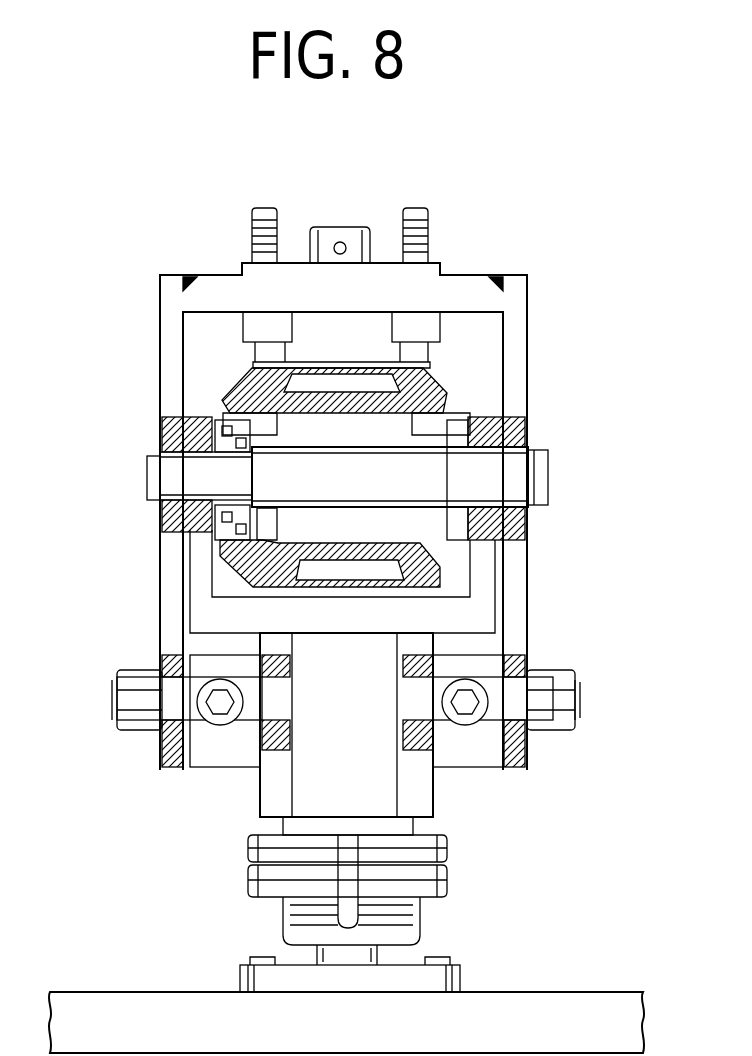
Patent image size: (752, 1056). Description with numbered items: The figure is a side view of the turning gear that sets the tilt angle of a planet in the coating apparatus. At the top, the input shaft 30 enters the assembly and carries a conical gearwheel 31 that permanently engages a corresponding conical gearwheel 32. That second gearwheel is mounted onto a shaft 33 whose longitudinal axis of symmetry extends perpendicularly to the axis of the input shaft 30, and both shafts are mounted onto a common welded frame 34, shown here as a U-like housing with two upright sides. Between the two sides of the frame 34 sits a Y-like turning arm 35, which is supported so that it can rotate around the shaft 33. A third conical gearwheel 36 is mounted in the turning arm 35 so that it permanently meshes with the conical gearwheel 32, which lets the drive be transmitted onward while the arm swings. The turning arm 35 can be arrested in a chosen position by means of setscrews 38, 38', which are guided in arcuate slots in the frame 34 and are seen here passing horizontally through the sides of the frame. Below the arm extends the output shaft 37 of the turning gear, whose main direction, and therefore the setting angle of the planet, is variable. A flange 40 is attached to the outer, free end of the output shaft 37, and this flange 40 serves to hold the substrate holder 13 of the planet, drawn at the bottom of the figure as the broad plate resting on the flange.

The substrate holder 13 is at (537, 1006).
The input shaft 30 is at (352, 226).
The conical gearwheel 31 is at (440, 372).
The conical gearwheel 32 is at (222, 405).
The shaft 33 is at (175, 470).
The frame 34 is at (167, 330).
The turning arm 35 is at (200, 573).
The third conical gearwheel 36 is at (447, 570).
The output shaft 37 is at (420, 925).
The setscrew 38 is at (422, 725).
The setscrew 38' is at (201, 736).
The flange 40 is at (240, 982).